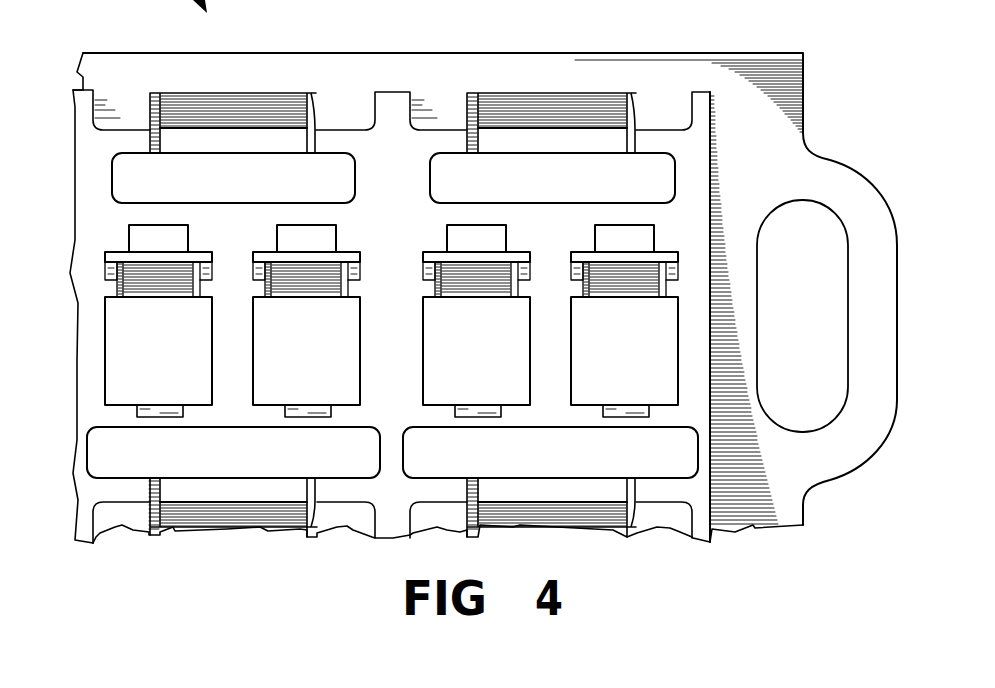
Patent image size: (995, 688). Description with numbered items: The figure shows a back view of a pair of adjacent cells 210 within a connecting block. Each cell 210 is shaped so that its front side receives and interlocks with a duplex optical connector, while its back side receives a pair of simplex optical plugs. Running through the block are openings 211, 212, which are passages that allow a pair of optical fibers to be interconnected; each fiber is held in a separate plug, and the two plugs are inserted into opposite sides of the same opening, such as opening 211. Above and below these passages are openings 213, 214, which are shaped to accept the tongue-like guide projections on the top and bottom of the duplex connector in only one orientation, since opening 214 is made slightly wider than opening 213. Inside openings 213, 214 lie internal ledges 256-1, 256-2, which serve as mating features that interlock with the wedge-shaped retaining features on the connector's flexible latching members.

The cell 210 is at (181, 68).
The opening 211 is at (641, 362).
The opening 212 is at (493, 362).
The opening 213 is at (533, 184).
The opening 214 is at (534, 472).
The internal ledge 256-1 is at (550, 120).
The internal ledge 256-2 is at (550, 512).